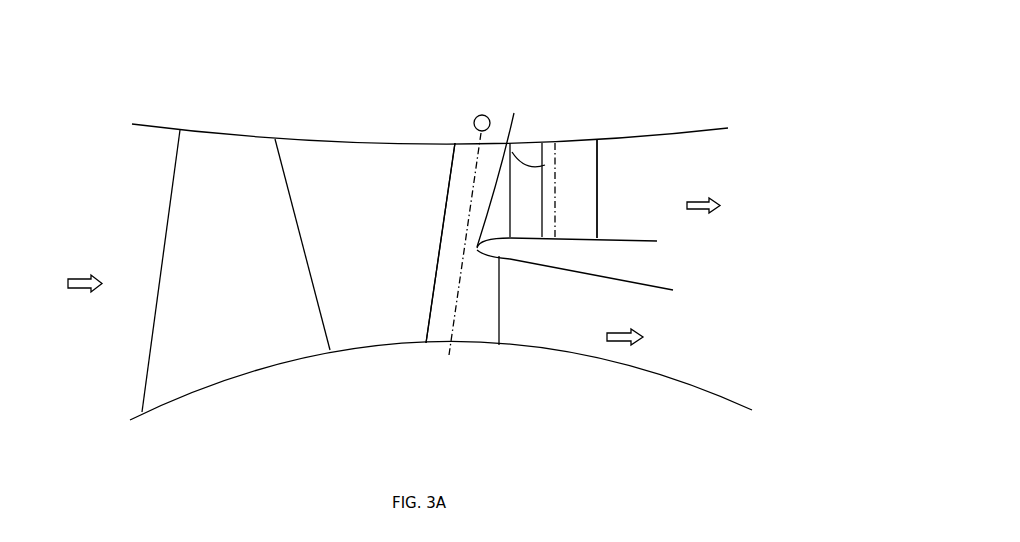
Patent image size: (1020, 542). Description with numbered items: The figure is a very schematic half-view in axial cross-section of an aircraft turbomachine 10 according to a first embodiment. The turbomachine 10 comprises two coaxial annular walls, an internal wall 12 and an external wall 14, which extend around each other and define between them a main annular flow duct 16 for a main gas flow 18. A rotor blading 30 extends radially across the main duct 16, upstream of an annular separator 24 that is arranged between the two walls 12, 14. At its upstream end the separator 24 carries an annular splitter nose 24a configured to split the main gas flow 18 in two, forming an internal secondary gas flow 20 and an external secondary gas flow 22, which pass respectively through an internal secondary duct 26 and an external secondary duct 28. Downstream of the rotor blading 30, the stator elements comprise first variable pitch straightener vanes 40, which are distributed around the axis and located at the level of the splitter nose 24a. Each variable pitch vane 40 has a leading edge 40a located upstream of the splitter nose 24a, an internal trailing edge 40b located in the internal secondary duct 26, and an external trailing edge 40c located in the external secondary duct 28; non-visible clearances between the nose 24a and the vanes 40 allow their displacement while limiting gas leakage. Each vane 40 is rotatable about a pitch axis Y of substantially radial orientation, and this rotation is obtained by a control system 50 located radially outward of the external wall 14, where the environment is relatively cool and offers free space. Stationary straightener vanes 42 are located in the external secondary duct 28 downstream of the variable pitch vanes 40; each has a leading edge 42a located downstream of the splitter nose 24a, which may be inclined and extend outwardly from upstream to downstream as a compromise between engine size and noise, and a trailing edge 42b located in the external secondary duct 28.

The turbomachine 10 is at (621, 59).
The internal annular wall 12 is at (352, 352).
The external annular wall 14 is at (332, 141).
The main annular flow duct 16 is at (365, 244).
The main gas flow 18 is at (83, 273).
The internal secondary gas flow 20 is at (632, 345).
The external secondary gas flow 22 is at (698, 213).
The annular separator 24 is at (637, 257).
The annular splitter nose 24a is at (502, 171).
The internal secondary duct 26 is at (623, 319).
The external secondary duct 28 is at (709, 183).
The rotor blading 30 is at (197, 366).
The first variable pitch straightener vanes 40 is at (480, 346).
The leading edge 40a is at (428, 283).
The internal trailing edge 40b is at (499, 325).
The external trailing edge 40c is at (555, 143).
The stationary straightener vanes 42 is at (586, 165).
The leading edge 42a is at (545, 167).
The trailing edge 42b is at (598, 210).
The control system 50 is at (480, 115).
The pitch axis Y is at (460, 273).